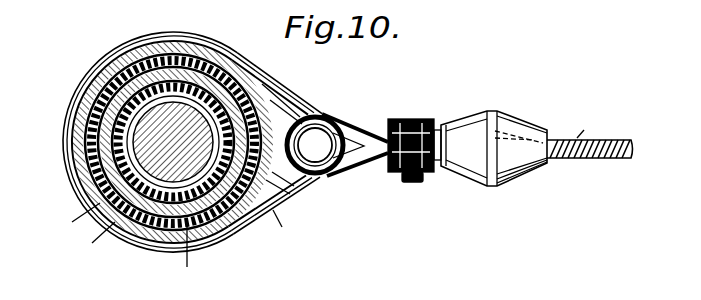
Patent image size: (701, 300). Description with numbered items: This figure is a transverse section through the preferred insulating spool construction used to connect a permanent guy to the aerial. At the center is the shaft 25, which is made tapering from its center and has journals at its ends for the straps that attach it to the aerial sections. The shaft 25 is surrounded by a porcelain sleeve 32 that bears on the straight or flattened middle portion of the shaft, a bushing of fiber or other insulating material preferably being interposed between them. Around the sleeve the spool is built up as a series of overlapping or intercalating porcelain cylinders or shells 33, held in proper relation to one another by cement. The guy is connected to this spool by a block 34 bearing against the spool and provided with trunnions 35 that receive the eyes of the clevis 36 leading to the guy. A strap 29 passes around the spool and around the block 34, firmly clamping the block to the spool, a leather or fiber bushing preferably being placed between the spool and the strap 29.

The shaft 25 is at (147, 128).
The porcelain sleeve 32 is at (124, 149).
The porcelain cylinders or shells 33 is at (88, 182).
The strap 29 is at (270, 83).
The trunnions 35 is at (318, 134).
The block 34 is at (290, 182).
The clevis 36 is at (365, 133).